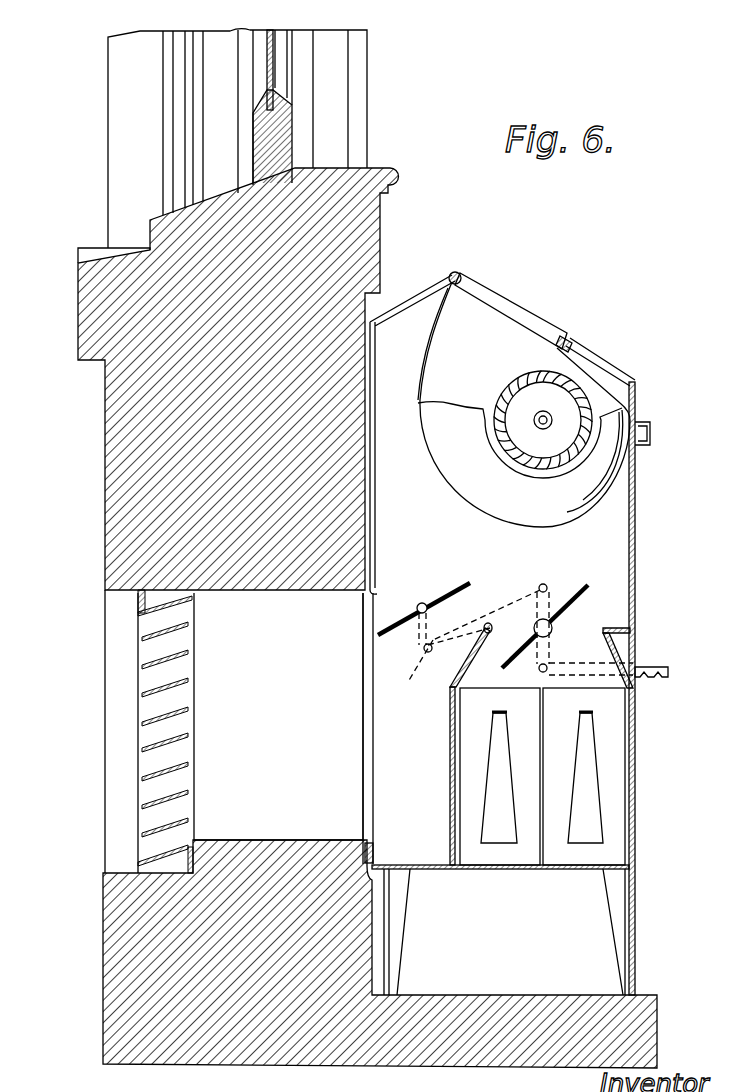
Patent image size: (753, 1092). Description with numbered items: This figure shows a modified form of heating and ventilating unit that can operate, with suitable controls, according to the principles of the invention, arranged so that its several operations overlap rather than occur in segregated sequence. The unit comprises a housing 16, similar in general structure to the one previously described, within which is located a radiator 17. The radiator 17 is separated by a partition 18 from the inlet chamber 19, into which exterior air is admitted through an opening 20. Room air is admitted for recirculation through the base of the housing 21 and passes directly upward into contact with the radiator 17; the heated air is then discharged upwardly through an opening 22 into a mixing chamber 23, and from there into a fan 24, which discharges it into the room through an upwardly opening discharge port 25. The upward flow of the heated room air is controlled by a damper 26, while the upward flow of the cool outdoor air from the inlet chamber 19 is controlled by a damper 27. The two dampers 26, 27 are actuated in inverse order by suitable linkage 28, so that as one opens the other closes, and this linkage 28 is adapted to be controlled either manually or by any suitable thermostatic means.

The housing 16 is at (635, 738).
The radiator 17 is at (593, 853).
The partition 18 is at (450, 787).
The inlet chamber 19 is at (395, 762).
The opening 20 is at (278, 716).
The base of the housing 21 is at (398, 870).
The opening 22 is at (578, 612).
The mixing chamber 23 is at (548, 537).
The fan 24 is at (517, 421).
The discharge port 25 is at (520, 337).
The damper 26 is at (583, 586).
The damper 27 is at (468, 585).
The linkage 28 is at (466, 652).